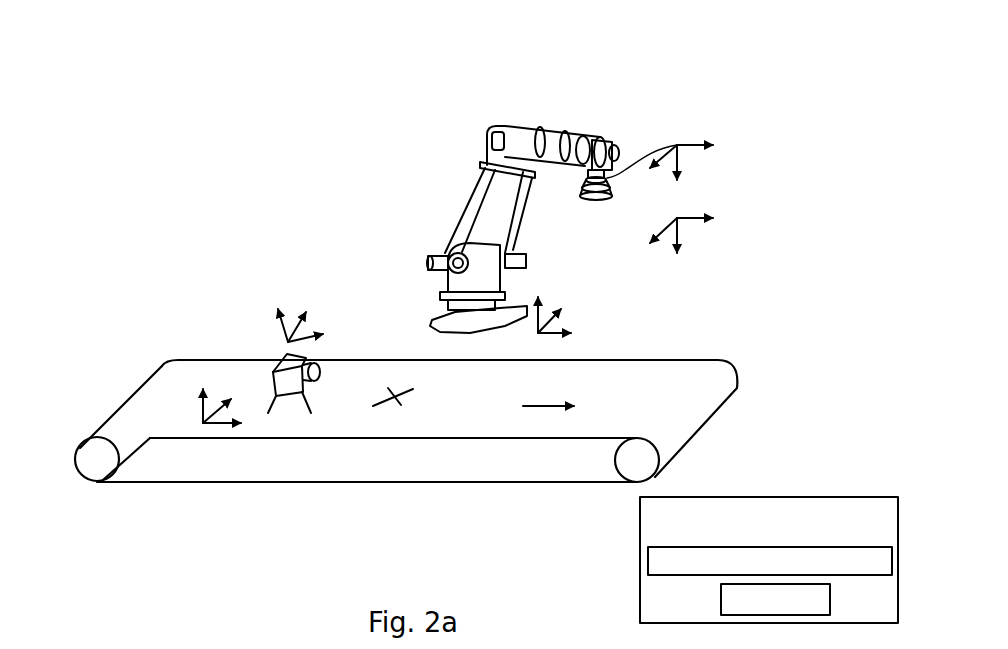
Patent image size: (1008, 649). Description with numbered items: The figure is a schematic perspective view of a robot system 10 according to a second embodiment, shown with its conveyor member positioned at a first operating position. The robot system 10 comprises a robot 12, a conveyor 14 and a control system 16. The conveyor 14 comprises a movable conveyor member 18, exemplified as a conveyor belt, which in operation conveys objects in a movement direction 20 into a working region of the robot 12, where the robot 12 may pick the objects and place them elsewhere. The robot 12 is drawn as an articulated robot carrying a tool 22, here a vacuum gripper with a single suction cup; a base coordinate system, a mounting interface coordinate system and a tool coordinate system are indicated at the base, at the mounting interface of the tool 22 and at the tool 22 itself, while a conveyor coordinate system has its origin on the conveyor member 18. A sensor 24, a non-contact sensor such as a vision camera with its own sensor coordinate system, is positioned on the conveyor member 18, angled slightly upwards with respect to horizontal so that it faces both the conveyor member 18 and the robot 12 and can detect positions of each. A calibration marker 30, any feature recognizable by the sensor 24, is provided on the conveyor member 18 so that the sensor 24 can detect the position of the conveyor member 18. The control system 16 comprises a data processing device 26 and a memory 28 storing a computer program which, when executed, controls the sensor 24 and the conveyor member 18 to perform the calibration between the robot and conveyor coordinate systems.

The robot system 10 is at (101, 46).
The robot 12 is at (457, 128).
The conveyor 14 is at (87, 380).
The control system 16 is at (779, 497).
The conveyor member 18 is at (657, 373).
The movement direction 20 is at (548, 389).
The tool 22 is at (677, 218).
The sensor 24 is at (307, 388).
The data processing device 26 is at (770, 561).
The memory 28 is at (775, 599).
The calibration marker 30 is at (397, 398).